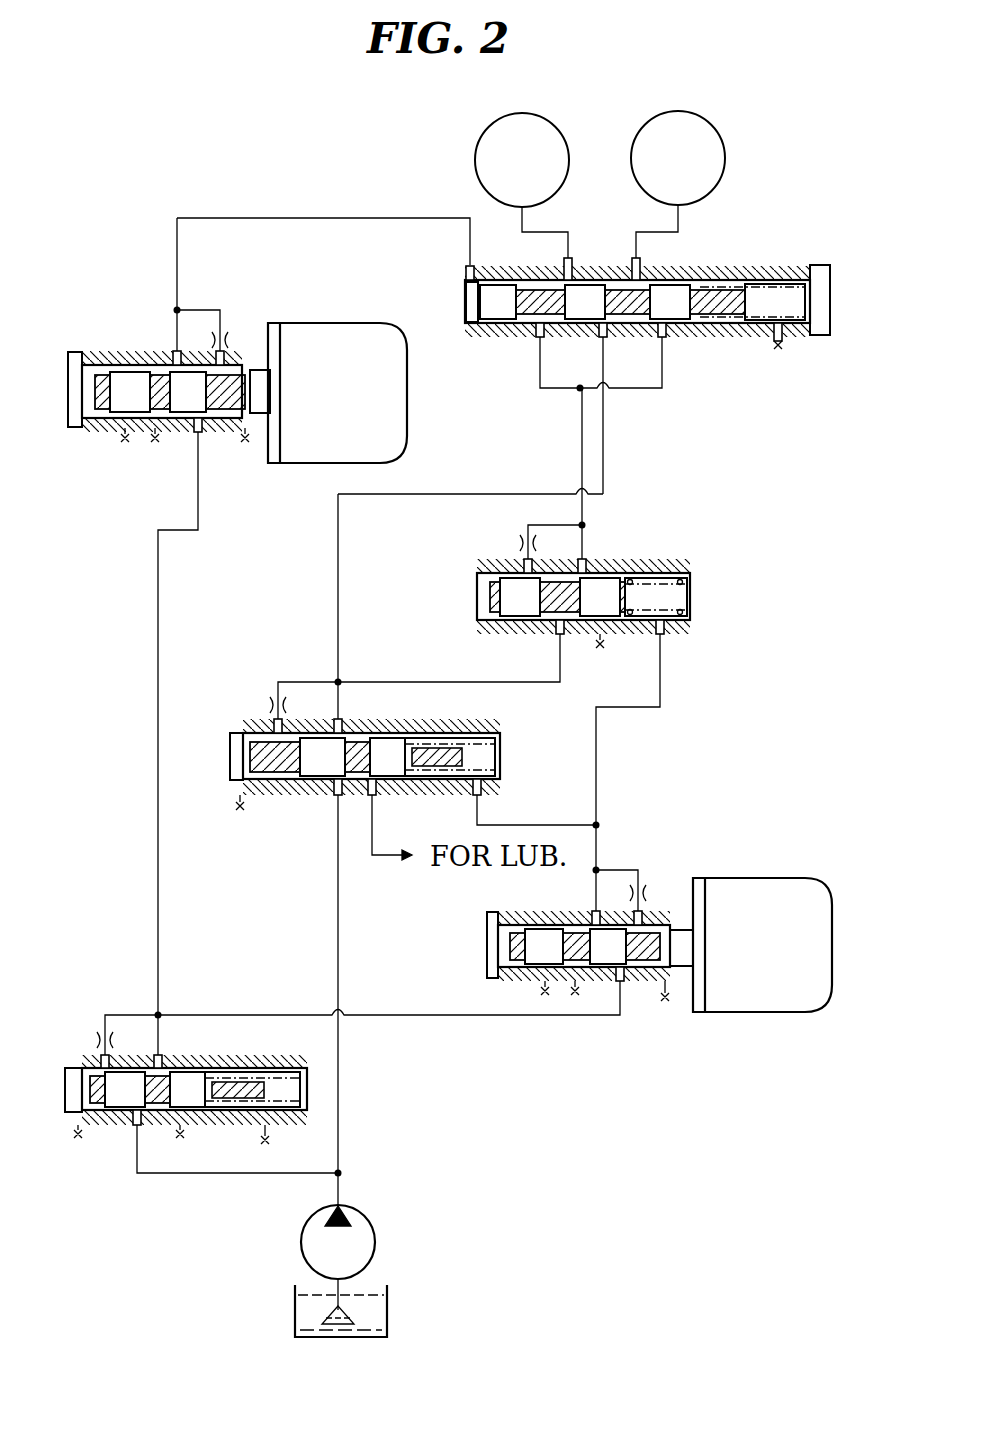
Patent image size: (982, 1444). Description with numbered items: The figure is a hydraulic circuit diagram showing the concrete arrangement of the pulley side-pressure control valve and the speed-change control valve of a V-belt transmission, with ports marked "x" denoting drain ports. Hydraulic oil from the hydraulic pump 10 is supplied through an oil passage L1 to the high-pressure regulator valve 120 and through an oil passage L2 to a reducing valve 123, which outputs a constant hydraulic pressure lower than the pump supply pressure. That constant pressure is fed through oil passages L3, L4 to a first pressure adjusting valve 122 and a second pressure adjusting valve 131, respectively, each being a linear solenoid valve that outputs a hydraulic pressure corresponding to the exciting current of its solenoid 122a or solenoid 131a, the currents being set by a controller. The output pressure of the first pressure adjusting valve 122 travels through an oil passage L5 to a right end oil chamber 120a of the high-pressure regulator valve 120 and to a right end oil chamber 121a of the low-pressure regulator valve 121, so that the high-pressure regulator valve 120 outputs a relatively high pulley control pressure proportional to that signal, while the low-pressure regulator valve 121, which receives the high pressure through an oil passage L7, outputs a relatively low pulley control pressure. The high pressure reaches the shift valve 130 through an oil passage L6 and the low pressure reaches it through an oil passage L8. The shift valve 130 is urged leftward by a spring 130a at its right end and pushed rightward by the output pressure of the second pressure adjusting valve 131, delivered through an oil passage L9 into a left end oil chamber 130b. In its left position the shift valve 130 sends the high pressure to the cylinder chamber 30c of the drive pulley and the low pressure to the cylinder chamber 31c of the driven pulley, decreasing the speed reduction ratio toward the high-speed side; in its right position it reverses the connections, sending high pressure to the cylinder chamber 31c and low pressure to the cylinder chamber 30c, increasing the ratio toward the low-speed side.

The hydraulic pump 10 is at (368, 1228).
The cylinder chamber of the drive pulley 30c is at (548, 176).
The cylinder chamber of the driven pulley 31c is at (704, 174).
The high-pressure regulator valve 120 is at (401, 736).
The right end oil chamber of the high-pressure regulator valve 120a is at (496, 796).
The low-pressure regulator valve 121 is at (636, 578).
The right end oil chamber of the low-pressure regulator valve 121a is at (678, 598).
The first pressure adjusting valve 122 is at (576, 920).
The solenoid of the first pressure adjusting valve 122a is at (796, 954).
The reducing valve 123 is at (192, 1060).
The shift valve 130 is at (599, 328).
The spring 130a is at (702, 346).
The left end oil chamber of the shift valve 130b is at (462, 300).
The second pressure adjusting valve 131 is at (156, 352).
The solenoid of the second pressure adjusting valve 131a is at (372, 406).
The oil passage L1 is at (338, 1066).
The oil passage L2 is at (192, 1173).
The oil passage L3 is at (512, 1015).
The oil passage L4 is at (158, 906).
The oil passage L5 is at (598, 855).
The oil passage L6 is at (338, 590).
The oil passage L7 is at (392, 682).
The oil passage L8 is at (582, 458).
The oil passage L9 is at (318, 218).